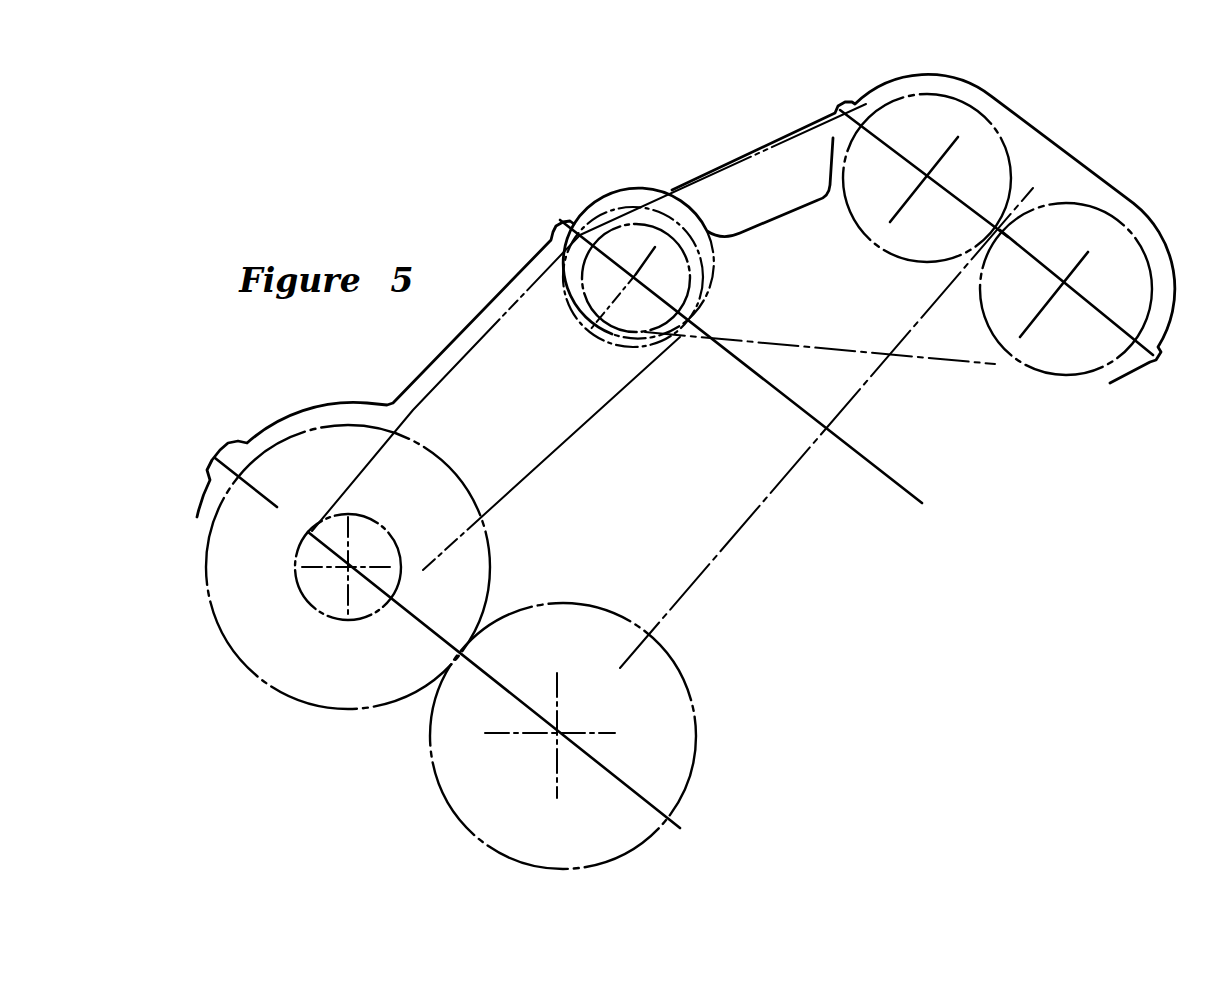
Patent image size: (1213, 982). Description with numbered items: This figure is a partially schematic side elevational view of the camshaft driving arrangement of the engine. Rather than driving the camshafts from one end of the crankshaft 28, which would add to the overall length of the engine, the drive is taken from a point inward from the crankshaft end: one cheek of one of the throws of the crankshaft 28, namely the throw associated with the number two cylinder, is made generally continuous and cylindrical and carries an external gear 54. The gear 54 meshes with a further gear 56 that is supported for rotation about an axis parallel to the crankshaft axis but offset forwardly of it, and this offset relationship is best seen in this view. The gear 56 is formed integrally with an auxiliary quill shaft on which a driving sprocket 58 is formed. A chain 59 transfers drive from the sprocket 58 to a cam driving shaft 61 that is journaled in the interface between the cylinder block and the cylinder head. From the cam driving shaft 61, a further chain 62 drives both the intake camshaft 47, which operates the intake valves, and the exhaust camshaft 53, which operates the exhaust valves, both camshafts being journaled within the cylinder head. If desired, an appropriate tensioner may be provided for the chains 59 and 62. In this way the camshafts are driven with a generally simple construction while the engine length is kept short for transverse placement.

The crankshaft 28 is at (557, 735).
The intake camshaft 47 is at (935, 176).
The exhaust camshaft 53 is at (1066, 292).
The external gear 54 is at (472, 833).
The gear 56 is at (283, 690).
The driving sprocket 58 is at (405, 574).
The chain 59 is at (556, 447).
The cam driving shaft 61 is at (636, 274).
The chain 62 is at (992, 364).